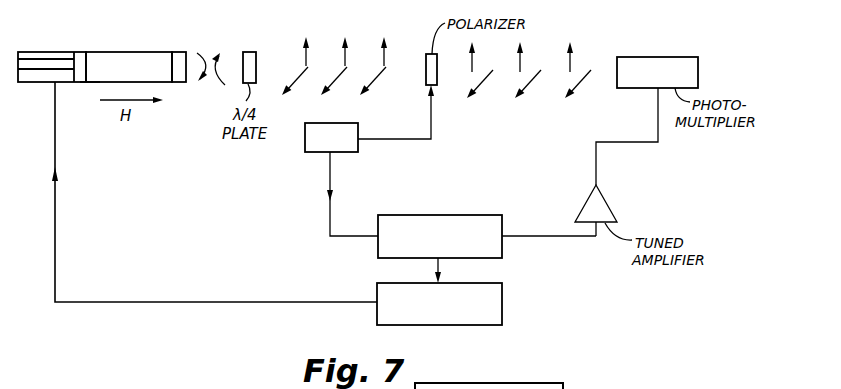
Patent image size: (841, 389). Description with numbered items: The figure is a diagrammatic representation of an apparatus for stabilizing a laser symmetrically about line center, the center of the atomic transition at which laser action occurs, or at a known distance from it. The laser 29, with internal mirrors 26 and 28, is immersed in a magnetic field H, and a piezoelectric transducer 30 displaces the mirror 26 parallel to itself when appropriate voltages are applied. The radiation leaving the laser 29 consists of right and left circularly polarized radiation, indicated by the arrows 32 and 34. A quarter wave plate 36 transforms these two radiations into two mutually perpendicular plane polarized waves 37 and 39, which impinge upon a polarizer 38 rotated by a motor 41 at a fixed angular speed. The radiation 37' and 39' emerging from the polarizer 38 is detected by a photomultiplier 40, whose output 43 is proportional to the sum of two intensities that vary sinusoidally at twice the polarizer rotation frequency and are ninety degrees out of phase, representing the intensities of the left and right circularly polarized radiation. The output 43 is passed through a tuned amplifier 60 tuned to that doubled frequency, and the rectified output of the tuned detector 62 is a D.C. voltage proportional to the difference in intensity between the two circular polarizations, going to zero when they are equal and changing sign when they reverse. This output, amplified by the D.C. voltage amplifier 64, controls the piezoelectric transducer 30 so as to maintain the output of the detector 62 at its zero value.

The internal mirror 26 is at (87, 52).
The internal mirror 28 is at (177, 52).
The laser 29 is at (92, 83).
The piezoelectric transducer 30 is at (48, 52).
The circularly polarized radiation arrow 32 is at (206, 84).
The circularly polarized radiation arrow 34 is at (225, 86).
The quarter wave plate 36 is at (256, 52).
The plane polarized wave 37 is at (334, 93).
The plane polarized wave 39 is at (359, 45).
The polarizer 38 is at (426, 84).
The emerging radiation 37' is at (538, 90).
The emerging radiation 39' is at (538, 51).
The photomultiplier 40 is at (698, 75).
The motor 41 is at (349, 152).
The photomultiplier output 43 is at (622, 142).
The tuned amplifier 60 is at (602, 208).
The tuned detector 62 is at (503, 216).
The D.C. voltage amplifier 64 is at (503, 284).